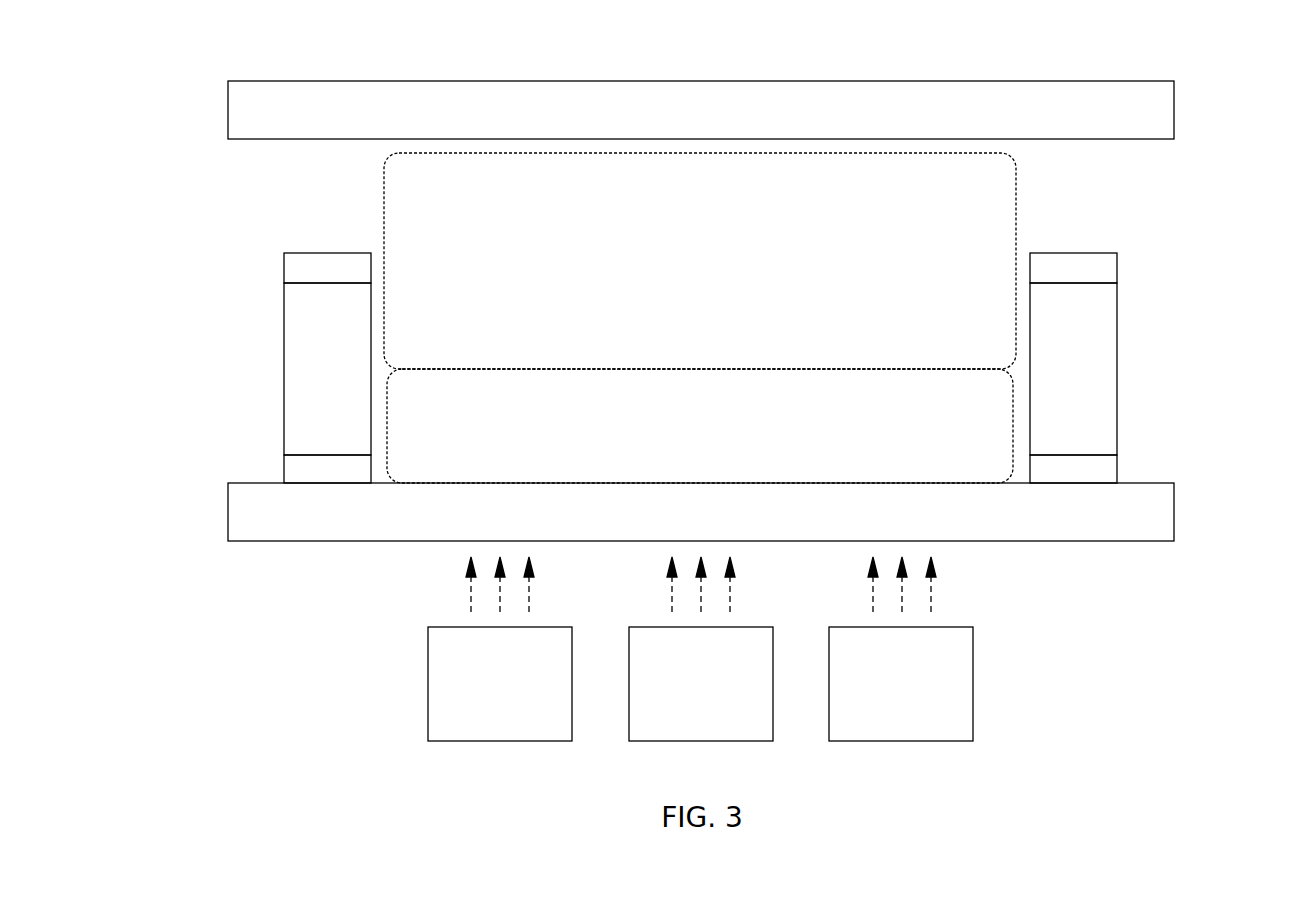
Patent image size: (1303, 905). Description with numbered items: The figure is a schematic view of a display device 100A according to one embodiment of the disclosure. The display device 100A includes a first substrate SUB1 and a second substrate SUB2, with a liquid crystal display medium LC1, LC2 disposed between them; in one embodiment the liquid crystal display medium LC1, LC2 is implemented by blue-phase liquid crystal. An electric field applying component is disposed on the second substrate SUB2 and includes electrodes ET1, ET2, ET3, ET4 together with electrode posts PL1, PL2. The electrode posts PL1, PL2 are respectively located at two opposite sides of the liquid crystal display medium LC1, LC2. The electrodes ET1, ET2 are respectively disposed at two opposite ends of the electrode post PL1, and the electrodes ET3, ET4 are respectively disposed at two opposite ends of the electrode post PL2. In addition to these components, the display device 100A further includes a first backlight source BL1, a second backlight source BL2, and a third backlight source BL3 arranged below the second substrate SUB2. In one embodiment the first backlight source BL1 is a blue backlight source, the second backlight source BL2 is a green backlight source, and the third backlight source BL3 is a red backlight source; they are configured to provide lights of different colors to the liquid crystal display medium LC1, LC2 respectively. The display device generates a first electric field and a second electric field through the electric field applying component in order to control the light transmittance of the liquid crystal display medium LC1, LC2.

The display device 100A is at (212, 62).
The first substrate SUB1 is at (701, 110).
The second substrate SUB2 is at (701, 512).
The liquid crystal display medium LC1 is at (700, 261).
The liquid crystal display medium LC2 is at (700, 426).
The electrode ET1 is at (303, 275).
The electrode ET2 is at (303, 477).
The electrode ET3 is at (1100, 259).
The electrode ET4 is at (1100, 460).
The electrode post PL1 is at (303, 361).
The electrode post PL2 is at (1100, 345).
The first backlight source BL1 is at (500, 649).
The second backlight source BL2 is at (701, 649).
The third backlight source BL3 is at (901, 649).